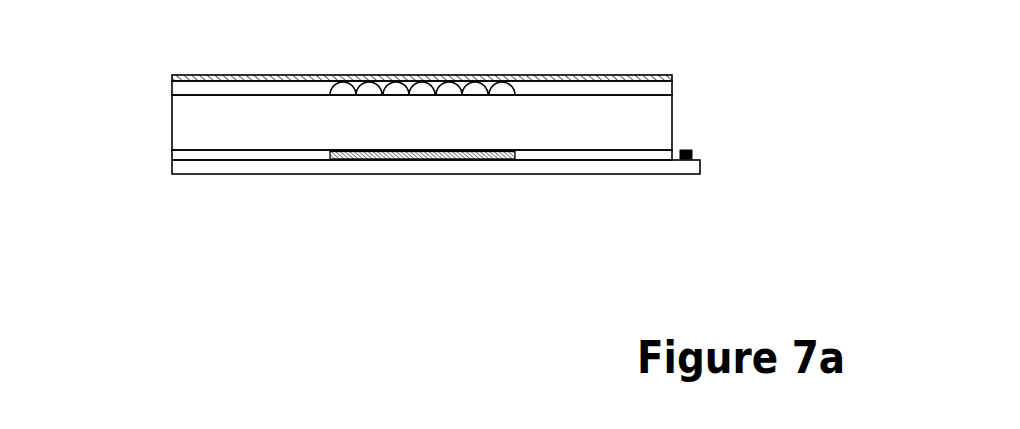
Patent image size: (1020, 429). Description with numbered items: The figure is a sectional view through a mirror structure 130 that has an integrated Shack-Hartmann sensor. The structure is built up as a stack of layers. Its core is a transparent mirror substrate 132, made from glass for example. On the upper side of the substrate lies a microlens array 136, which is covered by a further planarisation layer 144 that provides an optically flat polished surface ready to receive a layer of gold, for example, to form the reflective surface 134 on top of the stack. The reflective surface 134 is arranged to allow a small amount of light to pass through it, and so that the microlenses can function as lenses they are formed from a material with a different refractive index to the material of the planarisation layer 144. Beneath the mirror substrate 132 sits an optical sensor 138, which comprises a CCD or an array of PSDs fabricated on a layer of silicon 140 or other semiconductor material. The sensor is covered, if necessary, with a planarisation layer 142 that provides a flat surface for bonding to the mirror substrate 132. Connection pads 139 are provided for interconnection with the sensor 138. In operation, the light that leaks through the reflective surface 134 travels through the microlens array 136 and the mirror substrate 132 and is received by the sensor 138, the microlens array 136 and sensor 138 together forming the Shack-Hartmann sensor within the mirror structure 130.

The mirror structure 130 is at (315, 278).
The mirror substrate 132 is at (172, 123).
The reflective surface 134 is at (582, 74).
The microlens array 136 is at (368, 90).
The optical sensor 138 is at (488, 153).
The connection pads 139 is at (689, 150).
The layer of silicon 140 is at (305, 176).
The planarisation layer 142 is at (172, 155).
The further planarisation layer 144 is at (672, 84).